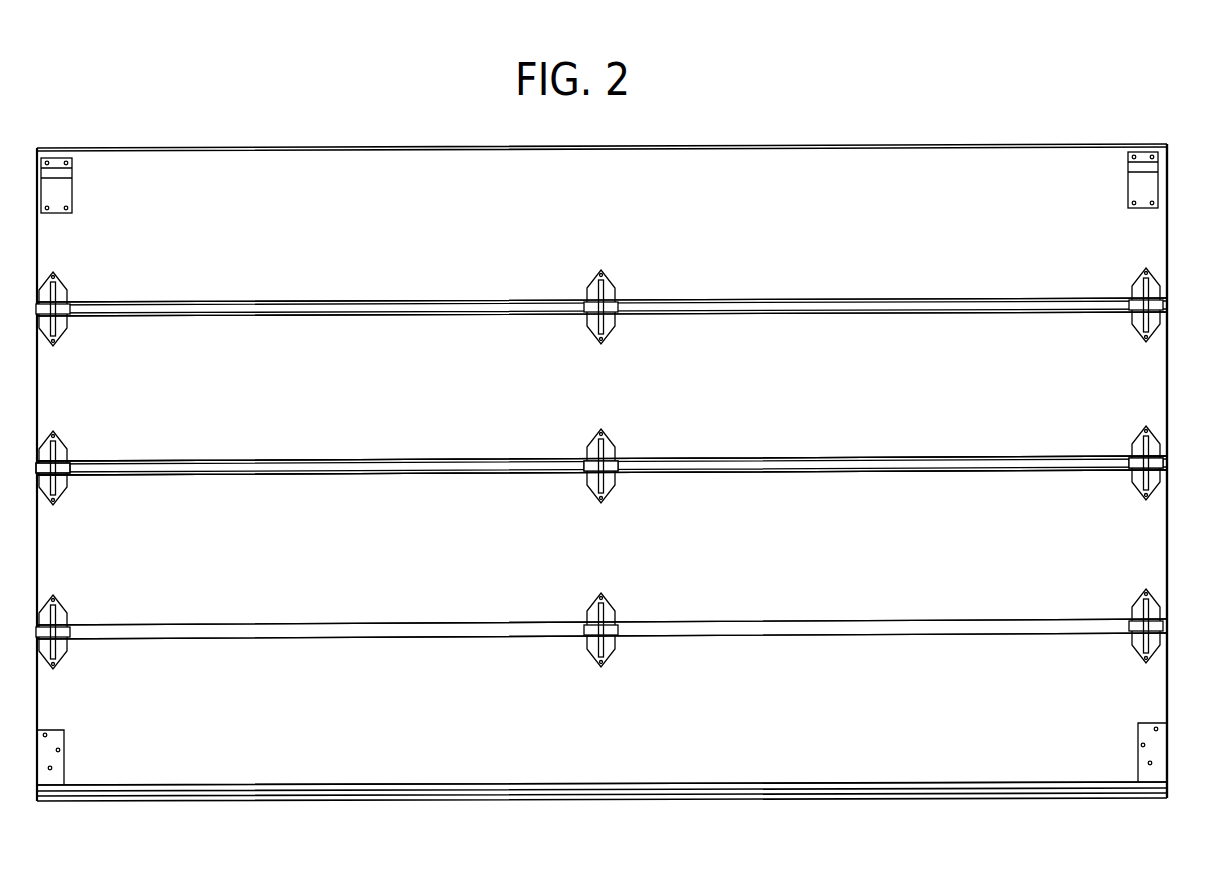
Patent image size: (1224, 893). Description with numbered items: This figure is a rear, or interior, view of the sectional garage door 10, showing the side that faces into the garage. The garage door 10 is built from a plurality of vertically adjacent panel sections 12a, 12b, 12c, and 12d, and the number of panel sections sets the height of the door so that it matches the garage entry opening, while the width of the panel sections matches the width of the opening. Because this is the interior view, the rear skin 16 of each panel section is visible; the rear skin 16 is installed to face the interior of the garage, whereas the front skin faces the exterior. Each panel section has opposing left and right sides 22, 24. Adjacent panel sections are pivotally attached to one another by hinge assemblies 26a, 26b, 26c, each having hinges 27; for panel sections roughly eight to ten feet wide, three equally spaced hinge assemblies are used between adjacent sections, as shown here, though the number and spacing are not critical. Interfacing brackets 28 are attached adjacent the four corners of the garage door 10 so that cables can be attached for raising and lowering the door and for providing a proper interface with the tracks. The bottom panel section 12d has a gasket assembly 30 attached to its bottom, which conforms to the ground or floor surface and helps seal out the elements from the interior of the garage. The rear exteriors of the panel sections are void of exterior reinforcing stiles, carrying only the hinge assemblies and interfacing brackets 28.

The sectional garage door 10 is at (1172, 180).
The panel section 12a is at (727, 229).
The panel section 12b is at (709, 398).
The panel section 12c is at (714, 567).
The bottom panel section 12d is at (714, 718).
The rear skin 16 is at (182, 443).
The left side 22 is at (1168, 400).
The right side 24 is at (38, 323).
The hinge assembly 26a is at (1141, 430).
The hinge assembly 26b is at (596, 440).
The hinge assembly 26c is at (58, 442).
The hinge 27 is at (68, 464).
The interfacing bracket 28 is at (72, 183).
The gasket assembly 30 is at (174, 810).